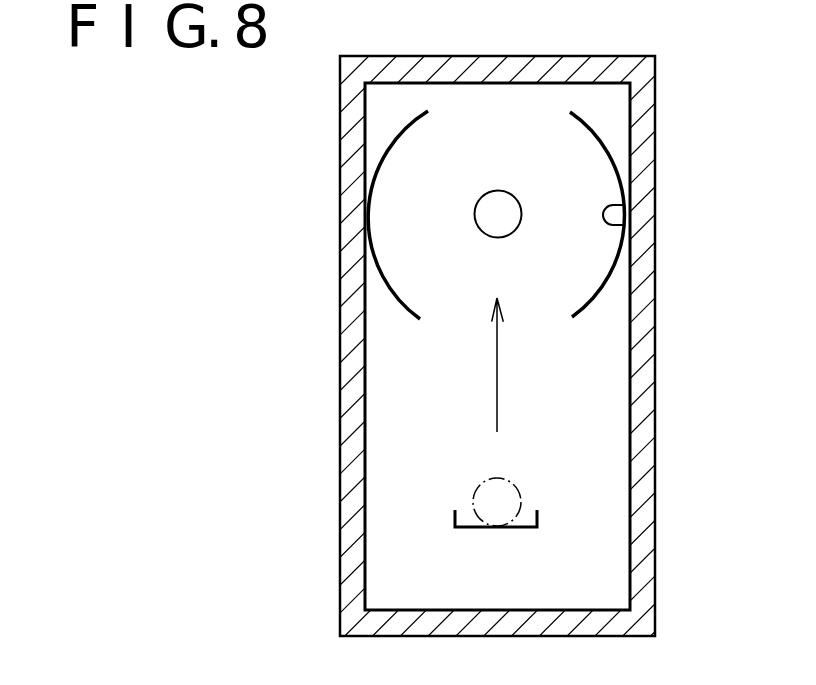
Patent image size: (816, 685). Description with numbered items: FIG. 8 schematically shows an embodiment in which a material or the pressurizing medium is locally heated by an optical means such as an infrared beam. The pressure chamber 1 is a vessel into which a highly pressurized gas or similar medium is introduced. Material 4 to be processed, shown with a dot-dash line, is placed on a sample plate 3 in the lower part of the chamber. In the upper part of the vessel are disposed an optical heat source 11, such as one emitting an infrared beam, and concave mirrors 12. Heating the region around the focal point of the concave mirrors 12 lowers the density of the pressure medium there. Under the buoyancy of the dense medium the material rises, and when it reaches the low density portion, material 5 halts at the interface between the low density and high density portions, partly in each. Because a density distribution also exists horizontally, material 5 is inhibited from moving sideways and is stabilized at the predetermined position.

The pressure chamber 1 is at (348, 200).
The sample plate 3 is at (455, 518).
The material 4 is at (463, 472).
The material 5 is at (495, 223).
The optical heat source 11 is at (616, 214).
The concave mirrors 12 is at (395, 142).